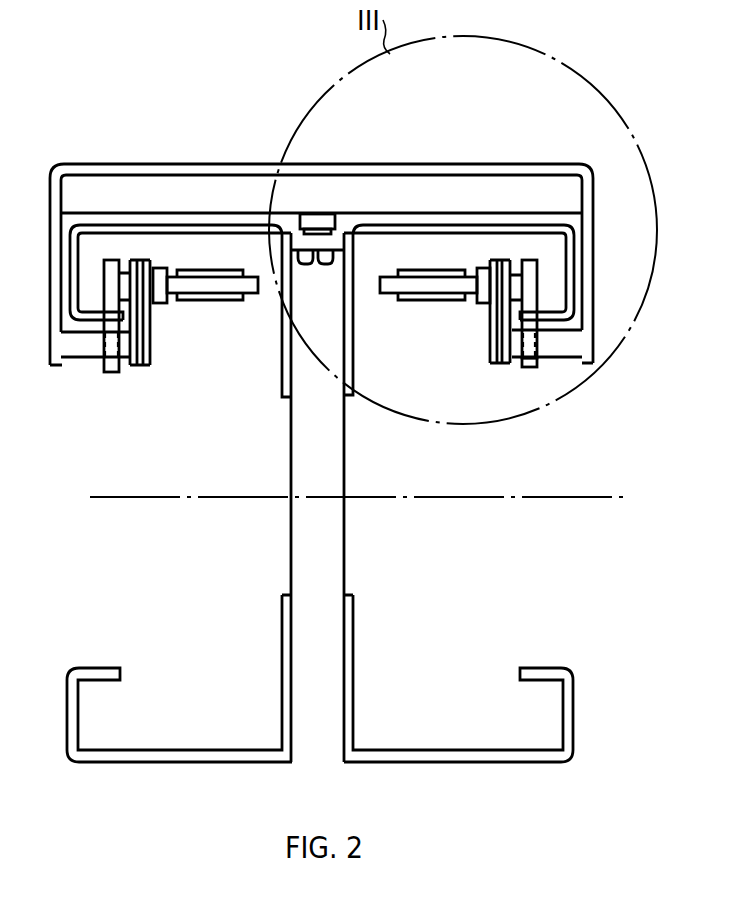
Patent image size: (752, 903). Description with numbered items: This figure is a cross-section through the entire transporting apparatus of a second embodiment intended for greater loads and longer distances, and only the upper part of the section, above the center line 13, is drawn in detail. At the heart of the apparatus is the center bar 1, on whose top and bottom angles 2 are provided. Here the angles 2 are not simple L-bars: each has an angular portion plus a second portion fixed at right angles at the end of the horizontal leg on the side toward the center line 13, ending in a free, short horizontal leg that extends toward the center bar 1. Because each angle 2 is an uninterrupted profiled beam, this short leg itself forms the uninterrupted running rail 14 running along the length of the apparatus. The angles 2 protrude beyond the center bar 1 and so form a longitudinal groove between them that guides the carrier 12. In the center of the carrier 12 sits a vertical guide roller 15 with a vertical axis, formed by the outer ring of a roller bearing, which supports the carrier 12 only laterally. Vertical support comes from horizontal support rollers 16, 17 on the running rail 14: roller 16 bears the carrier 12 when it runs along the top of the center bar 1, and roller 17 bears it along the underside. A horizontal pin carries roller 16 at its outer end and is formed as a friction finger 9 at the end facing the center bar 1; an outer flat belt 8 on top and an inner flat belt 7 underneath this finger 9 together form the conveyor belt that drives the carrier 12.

The center bar 1 is at (332, 556).
The angles 2 is at (281, 356).
The inner flat belt layer 7 is at (463, 301).
The outer flat belt layer 8 is at (421, 271).
The friction finger 9 is at (446, 295).
The carrier 12 is at (181, 157).
The center line 13 is at (566, 495).
The running rail 14 is at (557, 317).
The vertical guide roller 15 is at (338, 224).
The horizontal support roller 16 is at (539, 281).
The horizontal support roller 17 is at (537, 367).